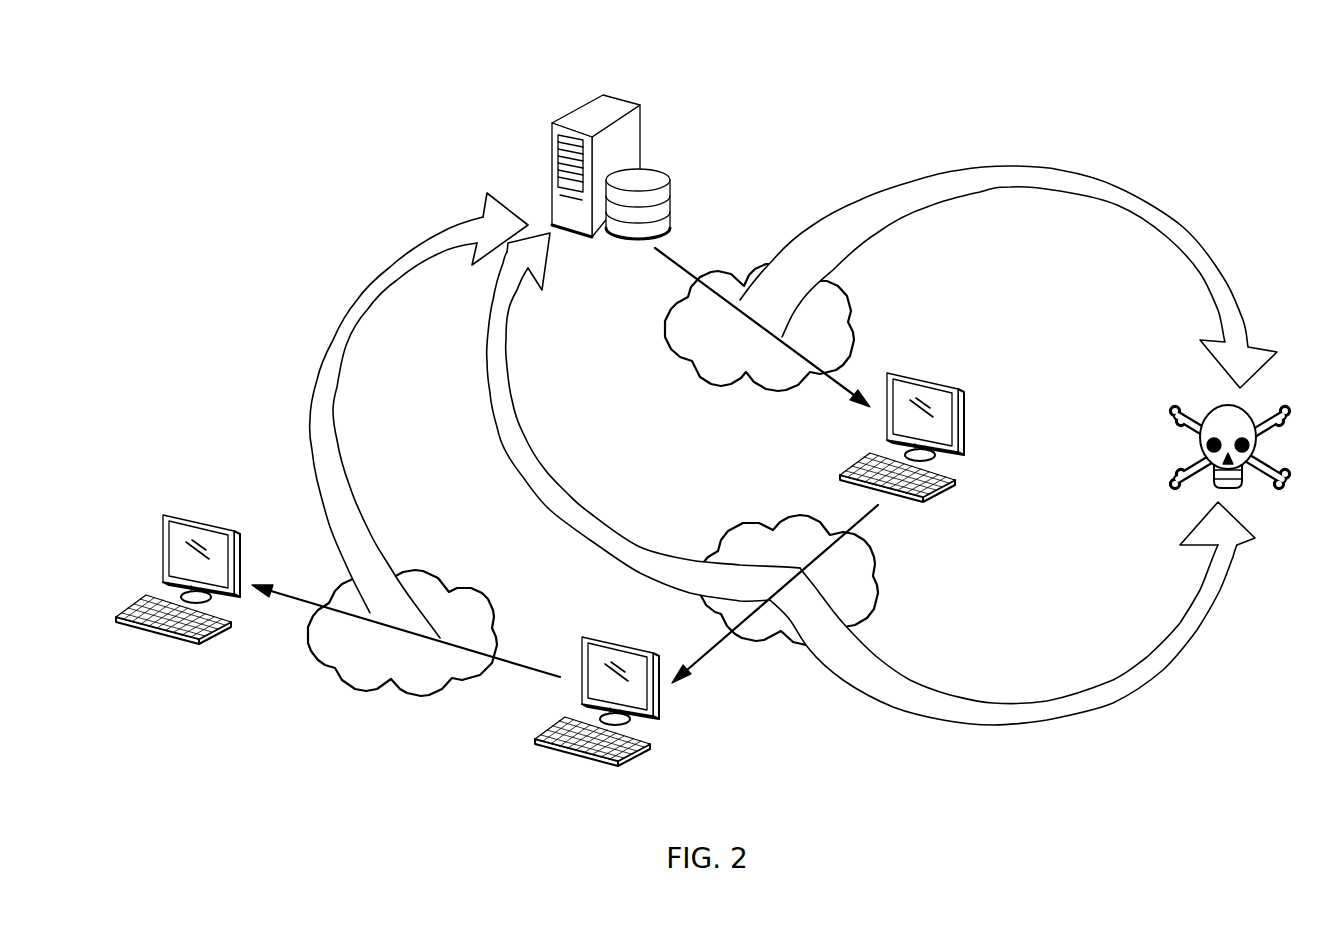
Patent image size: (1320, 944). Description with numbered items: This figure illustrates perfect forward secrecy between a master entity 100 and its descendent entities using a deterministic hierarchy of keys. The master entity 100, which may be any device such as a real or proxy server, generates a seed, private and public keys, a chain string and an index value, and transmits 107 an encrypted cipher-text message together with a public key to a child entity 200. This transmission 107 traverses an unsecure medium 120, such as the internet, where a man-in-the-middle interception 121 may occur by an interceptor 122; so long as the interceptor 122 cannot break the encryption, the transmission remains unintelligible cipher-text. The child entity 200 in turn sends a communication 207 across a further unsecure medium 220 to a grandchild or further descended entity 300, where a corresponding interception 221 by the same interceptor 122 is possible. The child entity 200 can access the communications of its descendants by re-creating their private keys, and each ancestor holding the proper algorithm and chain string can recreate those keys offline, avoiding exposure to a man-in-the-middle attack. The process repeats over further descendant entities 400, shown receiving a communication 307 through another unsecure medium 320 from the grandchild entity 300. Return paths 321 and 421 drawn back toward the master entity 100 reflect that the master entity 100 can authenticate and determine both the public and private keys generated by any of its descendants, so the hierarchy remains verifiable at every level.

The master entity 100 is at (588, 112).
The transmission 107 is at (668, 272).
The unsecure medium 120 is at (719, 393).
The man-in-the-middle interception 121 is at (991, 176).
The interceptor 122 is at (1228, 408).
The child entity 200 is at (930, 387).
The communication 207 is at (712, 655).
The network 220 is at (880, 578).
The attack path to attacker 221 is at (1083, 712).
The grandchild or further descended entity 300 is at (580, 752).
The data transmission from client terminal to client terminal 307 is at (527, 665).
The network 320 is at (402, 692).
The return path to server 321 is at (512, 447).
The further sibling or levels of descendant entities 400 is at (203, 520).
The return path to server 421 is at (343, 333).